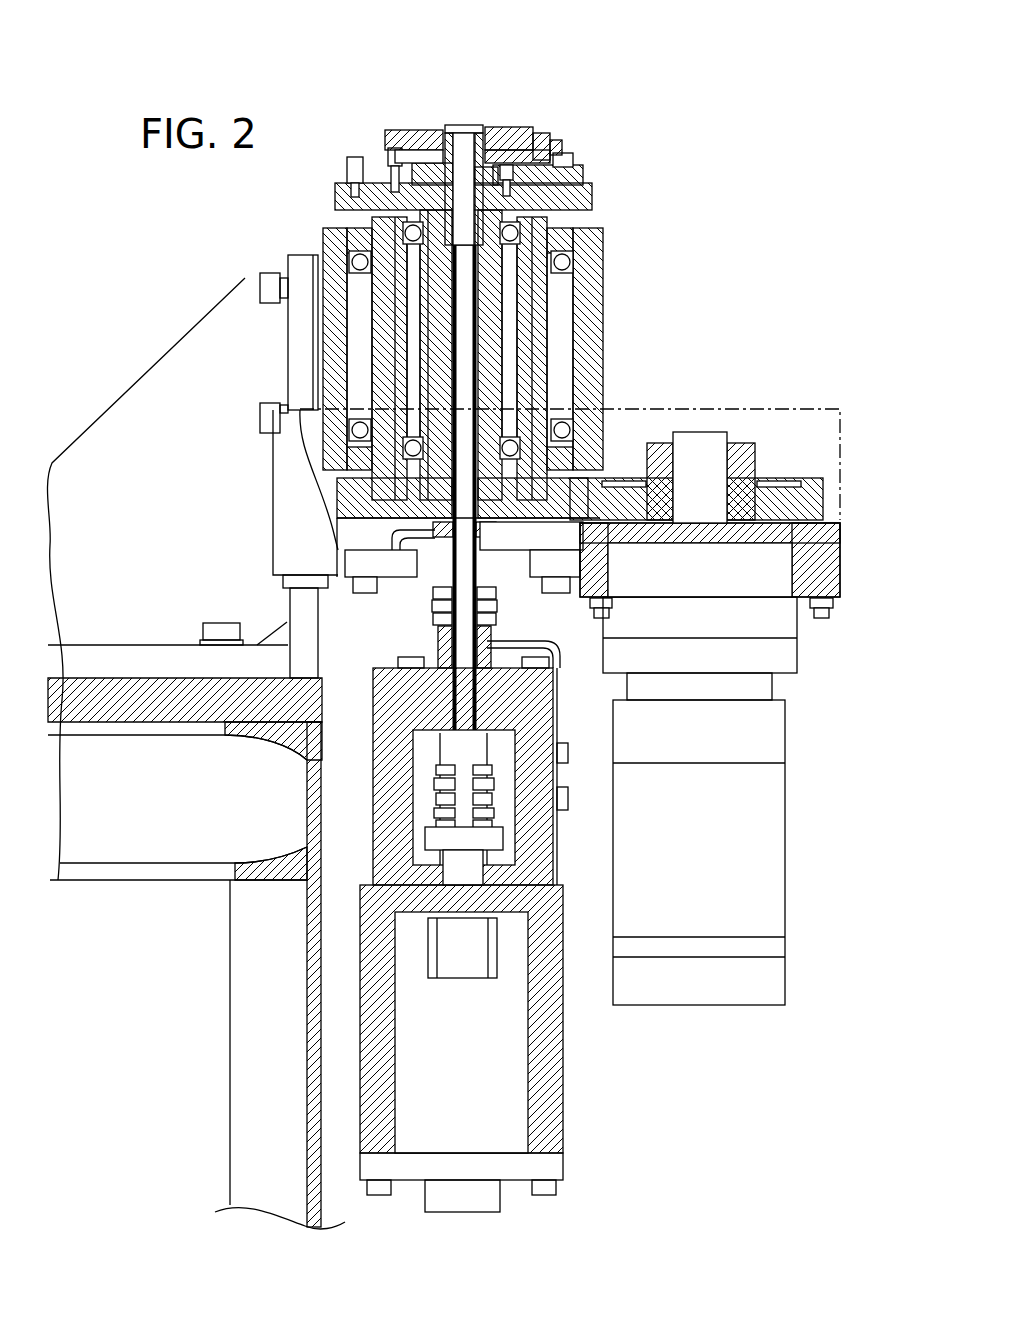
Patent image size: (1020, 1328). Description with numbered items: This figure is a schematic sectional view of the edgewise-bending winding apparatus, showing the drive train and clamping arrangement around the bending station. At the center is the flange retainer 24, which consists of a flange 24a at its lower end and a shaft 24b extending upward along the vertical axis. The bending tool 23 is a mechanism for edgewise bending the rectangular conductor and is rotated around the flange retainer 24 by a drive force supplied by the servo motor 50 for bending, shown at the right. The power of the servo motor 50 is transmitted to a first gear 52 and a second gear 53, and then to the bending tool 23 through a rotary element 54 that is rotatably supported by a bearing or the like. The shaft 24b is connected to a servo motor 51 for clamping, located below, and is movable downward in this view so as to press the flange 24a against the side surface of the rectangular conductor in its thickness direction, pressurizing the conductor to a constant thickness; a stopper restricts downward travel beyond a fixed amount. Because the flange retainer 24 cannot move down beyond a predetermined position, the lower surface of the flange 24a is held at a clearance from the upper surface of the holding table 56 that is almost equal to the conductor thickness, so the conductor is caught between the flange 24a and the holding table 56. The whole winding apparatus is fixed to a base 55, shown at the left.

The bending tool 23 is at (527, 128).
The flange retainer 24 is at (460, 106).
The flange 24a is at (470, 128).
The shaft 24b is at (512, 128).
The servo motor for bending 50 is at (763, 873).
The servo motor for clamping 51 is at (503, 1088).
The first gear 52 is at (742, 453).
The second gear 53 is at (602, 452).
The rotary element 54 is at (553, 221).
The base 55 is at (133, 707).
The holding table 56 is at (437, 128).